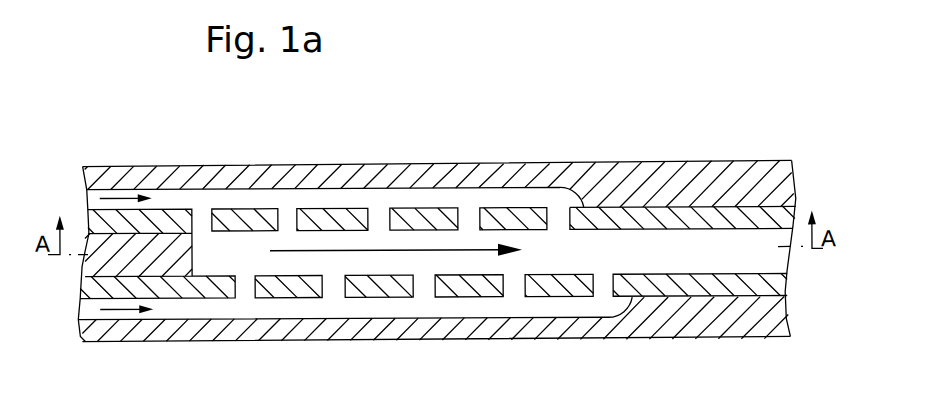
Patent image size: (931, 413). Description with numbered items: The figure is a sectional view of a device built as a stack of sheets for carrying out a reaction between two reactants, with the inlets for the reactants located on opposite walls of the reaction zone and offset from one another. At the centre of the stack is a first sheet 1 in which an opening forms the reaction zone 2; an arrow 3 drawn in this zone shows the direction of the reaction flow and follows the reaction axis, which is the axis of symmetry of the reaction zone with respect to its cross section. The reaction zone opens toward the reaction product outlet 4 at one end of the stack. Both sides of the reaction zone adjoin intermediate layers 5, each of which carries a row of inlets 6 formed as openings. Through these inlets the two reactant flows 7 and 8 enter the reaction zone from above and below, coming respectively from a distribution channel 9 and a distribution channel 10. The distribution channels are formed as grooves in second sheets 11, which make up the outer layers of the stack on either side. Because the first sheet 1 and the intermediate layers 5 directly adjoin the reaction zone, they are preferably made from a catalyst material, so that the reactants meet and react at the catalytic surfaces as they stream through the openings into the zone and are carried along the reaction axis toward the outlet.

The first sheet 1 is at (97, 258).
The reaction zone 2 is at (431, 242).
The arrow 3 is at (399, 250).
The reaction product outlet 4 is at (770, 237).
The intermediate layer 5 is at (623, 215).
The inlet 6 is at (200, 222).
The reactant flow 7 is at (118, 196).
The reactant flow 8 is at (115, 310).
The distribution channel 9 is at (246, 197).
The distribution channel 10 is at (227, 307).
The second sheet 11 is at (690, 175).